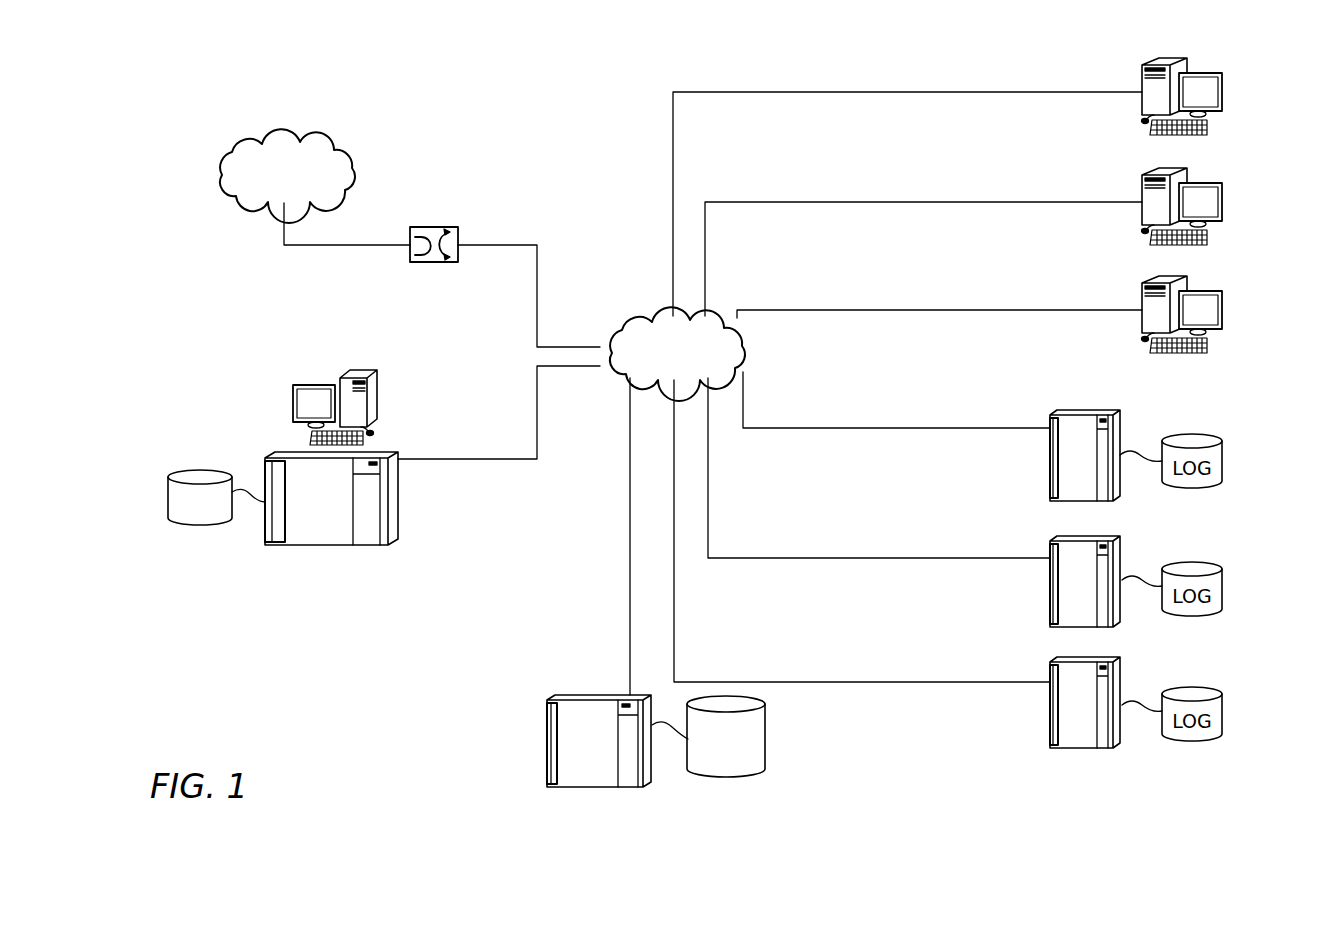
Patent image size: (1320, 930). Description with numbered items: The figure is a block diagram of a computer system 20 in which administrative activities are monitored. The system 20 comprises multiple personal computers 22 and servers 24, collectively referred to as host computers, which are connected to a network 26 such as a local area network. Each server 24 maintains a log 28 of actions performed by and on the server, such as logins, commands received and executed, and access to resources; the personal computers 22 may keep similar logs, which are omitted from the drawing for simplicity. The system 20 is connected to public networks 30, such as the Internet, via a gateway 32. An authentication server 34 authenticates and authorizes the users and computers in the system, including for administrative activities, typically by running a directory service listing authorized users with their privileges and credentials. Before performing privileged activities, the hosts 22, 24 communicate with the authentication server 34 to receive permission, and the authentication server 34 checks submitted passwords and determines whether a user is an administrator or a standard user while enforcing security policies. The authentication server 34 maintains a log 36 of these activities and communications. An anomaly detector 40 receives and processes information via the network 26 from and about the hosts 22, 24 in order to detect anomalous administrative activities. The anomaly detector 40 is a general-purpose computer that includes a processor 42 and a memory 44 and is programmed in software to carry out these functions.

The computer system 20 is at (1274, 66).
The personal computers 22 is at (1142, 81).
The servers 24 is at (1096, 410).
The network 26 is at (648, 315).
The log 28 is at (1188, 490).
The public networks 30 is at (212, 170).
The gateway 32 is at (436, 227).
The authentication server 34 is at (586, 694).
The log 36 is at (767, 755).
The anomaly detector 40 is at (334, 486).
The processor 42 is at (400, 481).
The memory 44 is at (216, 471).